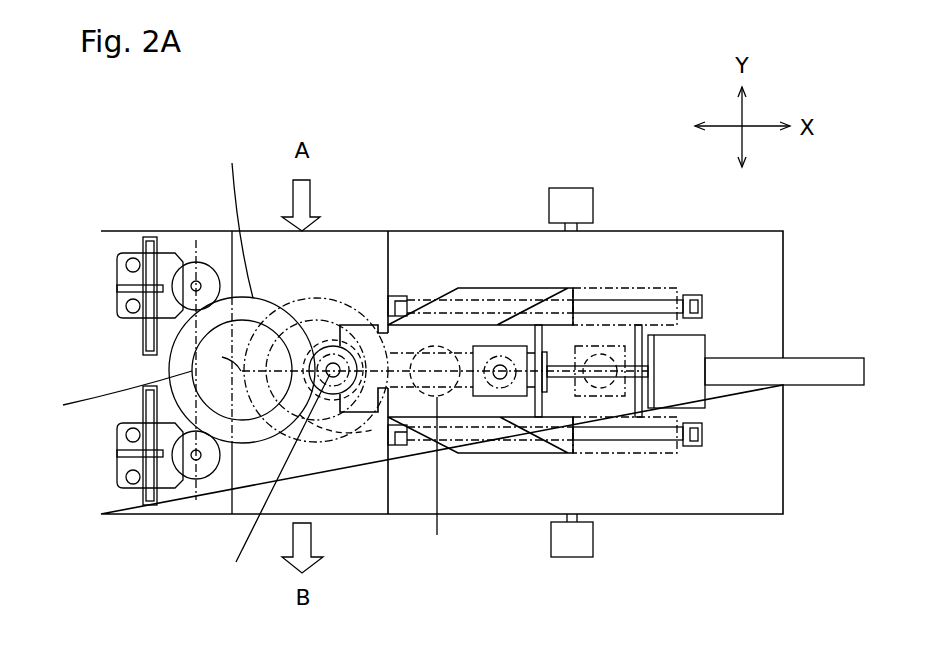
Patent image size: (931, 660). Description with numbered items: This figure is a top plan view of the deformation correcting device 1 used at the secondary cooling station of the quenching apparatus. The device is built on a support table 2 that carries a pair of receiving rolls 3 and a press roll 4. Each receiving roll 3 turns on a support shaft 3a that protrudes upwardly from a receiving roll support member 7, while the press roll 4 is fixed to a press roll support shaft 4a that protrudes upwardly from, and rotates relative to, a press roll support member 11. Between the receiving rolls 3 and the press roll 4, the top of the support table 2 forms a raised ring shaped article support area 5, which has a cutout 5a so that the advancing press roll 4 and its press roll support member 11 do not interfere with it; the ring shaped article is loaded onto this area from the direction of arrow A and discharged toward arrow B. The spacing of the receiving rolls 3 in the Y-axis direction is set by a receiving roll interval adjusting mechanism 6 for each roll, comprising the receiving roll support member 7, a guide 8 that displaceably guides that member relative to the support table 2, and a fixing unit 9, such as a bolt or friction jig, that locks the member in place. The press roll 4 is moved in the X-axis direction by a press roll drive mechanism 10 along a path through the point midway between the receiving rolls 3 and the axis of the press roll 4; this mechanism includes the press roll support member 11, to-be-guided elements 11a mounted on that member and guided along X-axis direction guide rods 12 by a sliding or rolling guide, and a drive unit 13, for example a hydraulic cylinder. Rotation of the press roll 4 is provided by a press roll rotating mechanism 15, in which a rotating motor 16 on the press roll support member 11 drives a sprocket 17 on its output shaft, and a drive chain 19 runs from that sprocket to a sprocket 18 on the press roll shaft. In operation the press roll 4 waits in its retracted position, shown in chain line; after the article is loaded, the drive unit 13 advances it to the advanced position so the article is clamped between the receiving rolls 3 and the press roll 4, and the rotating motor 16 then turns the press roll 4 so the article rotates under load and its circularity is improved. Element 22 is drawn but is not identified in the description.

The deformation correcting device 1 is at (490, 140).
The support table 2 is at (768, 288).
The receiving rolls 3 is at (197, 262).
The support shaft 3a is at (196, 460).
The press roll 4 is at (328, 345).
The press roll support shaft 4a is at (331, 376).
The ring shaped article support area 5 is at (273, 250).
The cutout 5a is at (353, 333).
The receiving roll interval adjusting mechanism 6 is at (50, 225).
The receiving roll support member 7 is at (120, 277).
The guide 8 is at (143, 334).
The fixing unit 9 is at (120, 255).
The press roll drive mechanism 10 is at (778, 570).
The press roll support member 11 is at (520, 408).
The to-be-guided elements 11a is at (497, 290).
The X-axis direction guide rods 12 is at (640, 305).
The drive unit 13 is at (760, 375).
The press roll rotating mechanism 15 is at (451, 325).
The rotating motor 16 is at (498, 397).
The sprocket 17 is at (480, 397).
The sprocket 18 is at (340, 425).
The drive chain 19 is at (406, 392).
The sensor 22 is at (570, 188).